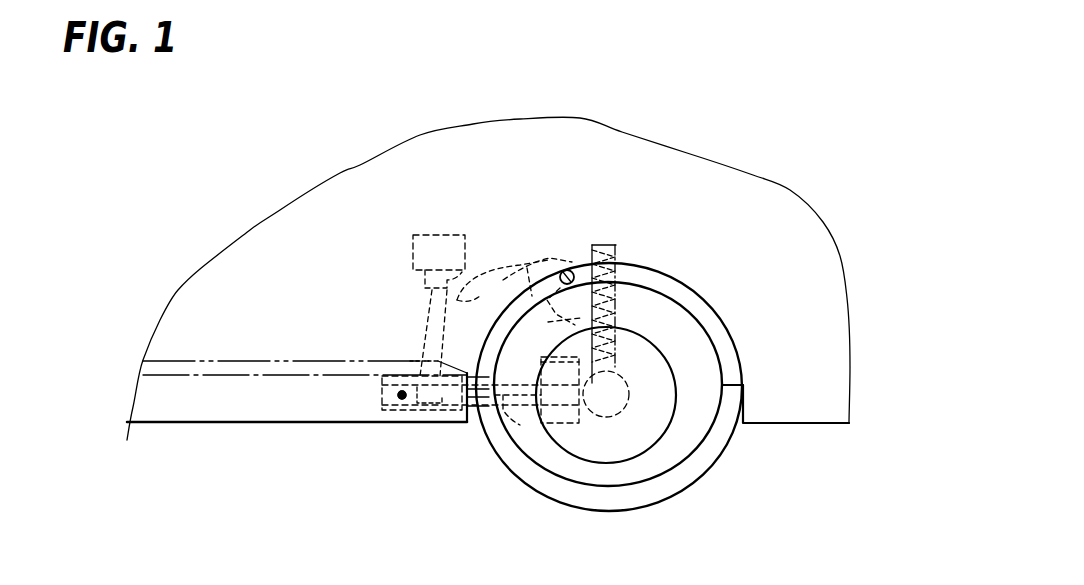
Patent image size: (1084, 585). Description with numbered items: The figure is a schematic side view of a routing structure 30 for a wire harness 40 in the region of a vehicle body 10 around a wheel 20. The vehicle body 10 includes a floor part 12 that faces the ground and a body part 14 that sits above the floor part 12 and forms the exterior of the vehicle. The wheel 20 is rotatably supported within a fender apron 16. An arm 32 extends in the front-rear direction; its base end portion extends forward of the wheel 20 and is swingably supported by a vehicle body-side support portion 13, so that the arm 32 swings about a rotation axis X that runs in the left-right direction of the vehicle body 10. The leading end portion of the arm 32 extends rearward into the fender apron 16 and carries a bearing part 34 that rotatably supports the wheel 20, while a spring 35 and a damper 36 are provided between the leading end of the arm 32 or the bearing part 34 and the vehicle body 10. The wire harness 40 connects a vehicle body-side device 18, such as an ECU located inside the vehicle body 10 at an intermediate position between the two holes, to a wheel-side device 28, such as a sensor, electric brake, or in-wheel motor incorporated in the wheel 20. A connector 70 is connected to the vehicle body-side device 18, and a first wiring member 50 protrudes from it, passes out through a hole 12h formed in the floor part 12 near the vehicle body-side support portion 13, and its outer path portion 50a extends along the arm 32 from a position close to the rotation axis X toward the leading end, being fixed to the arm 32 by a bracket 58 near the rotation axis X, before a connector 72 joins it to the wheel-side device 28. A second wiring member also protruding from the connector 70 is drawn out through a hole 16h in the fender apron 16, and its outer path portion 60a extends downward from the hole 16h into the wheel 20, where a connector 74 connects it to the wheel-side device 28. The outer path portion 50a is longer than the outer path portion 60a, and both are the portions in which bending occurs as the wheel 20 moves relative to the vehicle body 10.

The vehicle body 10 is at (808, 428).
The floor part 12 is at (194, 350).
The hole 12h is at (410, 360).
The vehicle body-side support portion 13 is at (400, 401).
The rotation axis X is at (396, 426).
The body part 14 is at (834, 338).
The fender apron 16 is at (718, 340).
The hole 16h is at (567, 258).
The vehicle body-side device 18 is at (442, 235).
The wheel 20 is at (700, 465).
The wheel-side device 28 is at (541, 359).
The routing structure 30 is at (577, 533).
The arm 32 is at (472, 412).
The bearing part 34 is at (630, 382).
The spring 35 is at (616, 252).
The damper 36 is at (616, 263).
The wire harness 40 is at (423, 302).
The first wiring member 50 is at (426, 330).
The outer path portion 50a is at (498, 440).
The bracket 58 is at (450, 424).
The outer path portion 60a is at (527, 268).
The connector 70 is at (470, 279).
The connector 72 is at (522, 426).
The connector 74 is at (613, 315).